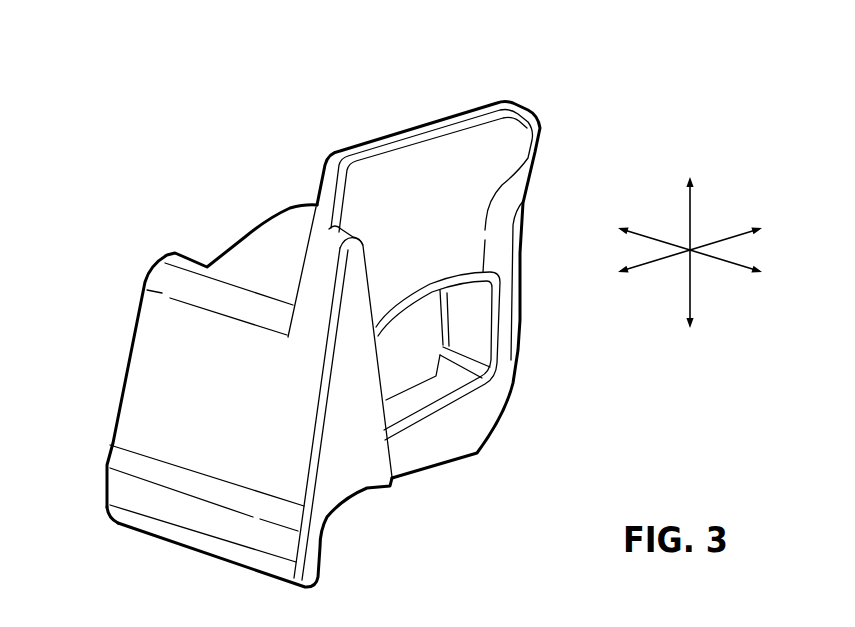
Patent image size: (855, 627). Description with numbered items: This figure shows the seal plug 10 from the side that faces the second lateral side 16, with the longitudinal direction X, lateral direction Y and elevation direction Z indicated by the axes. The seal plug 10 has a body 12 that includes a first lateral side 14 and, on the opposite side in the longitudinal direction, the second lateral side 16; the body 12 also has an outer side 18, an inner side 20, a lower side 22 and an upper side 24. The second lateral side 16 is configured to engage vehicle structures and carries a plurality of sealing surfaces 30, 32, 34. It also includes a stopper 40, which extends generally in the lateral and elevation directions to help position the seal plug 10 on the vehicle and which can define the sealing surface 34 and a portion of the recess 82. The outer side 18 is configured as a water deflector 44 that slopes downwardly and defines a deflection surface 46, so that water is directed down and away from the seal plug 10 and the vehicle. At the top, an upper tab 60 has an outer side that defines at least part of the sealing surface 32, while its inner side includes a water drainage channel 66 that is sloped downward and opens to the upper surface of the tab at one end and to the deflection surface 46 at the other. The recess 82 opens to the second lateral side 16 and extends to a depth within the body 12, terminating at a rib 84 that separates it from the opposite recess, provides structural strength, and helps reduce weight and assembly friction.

The seal plug 10 is at (103, 172).
The body 12 is at (112, 430).
The first lateral side 14 is at (237, 180).
The second lateral side 16 is at (503, 445).
The outer side 18 is at (92, 468).
The inner side 20 is at (573, 213).
The lower side 22 is at (443, 520).
The upper side 24 is at (302, 158).
The sealing surface 30 is at (430, 452).
The sealing surface 32 is at (412, 157).
The sealing surface 34 is at (347, 480).
The stopper 40 is at (317, 277).
The water deflector 44 is at (203, 415).
The deflection surface 46 is at (143, 363).
The upper tab 60 is at (545, 113).
The water drainage channel 66 is at (468, 110).
The recess 82 is at (470, 378).
The rib 84 is at (433, 322).